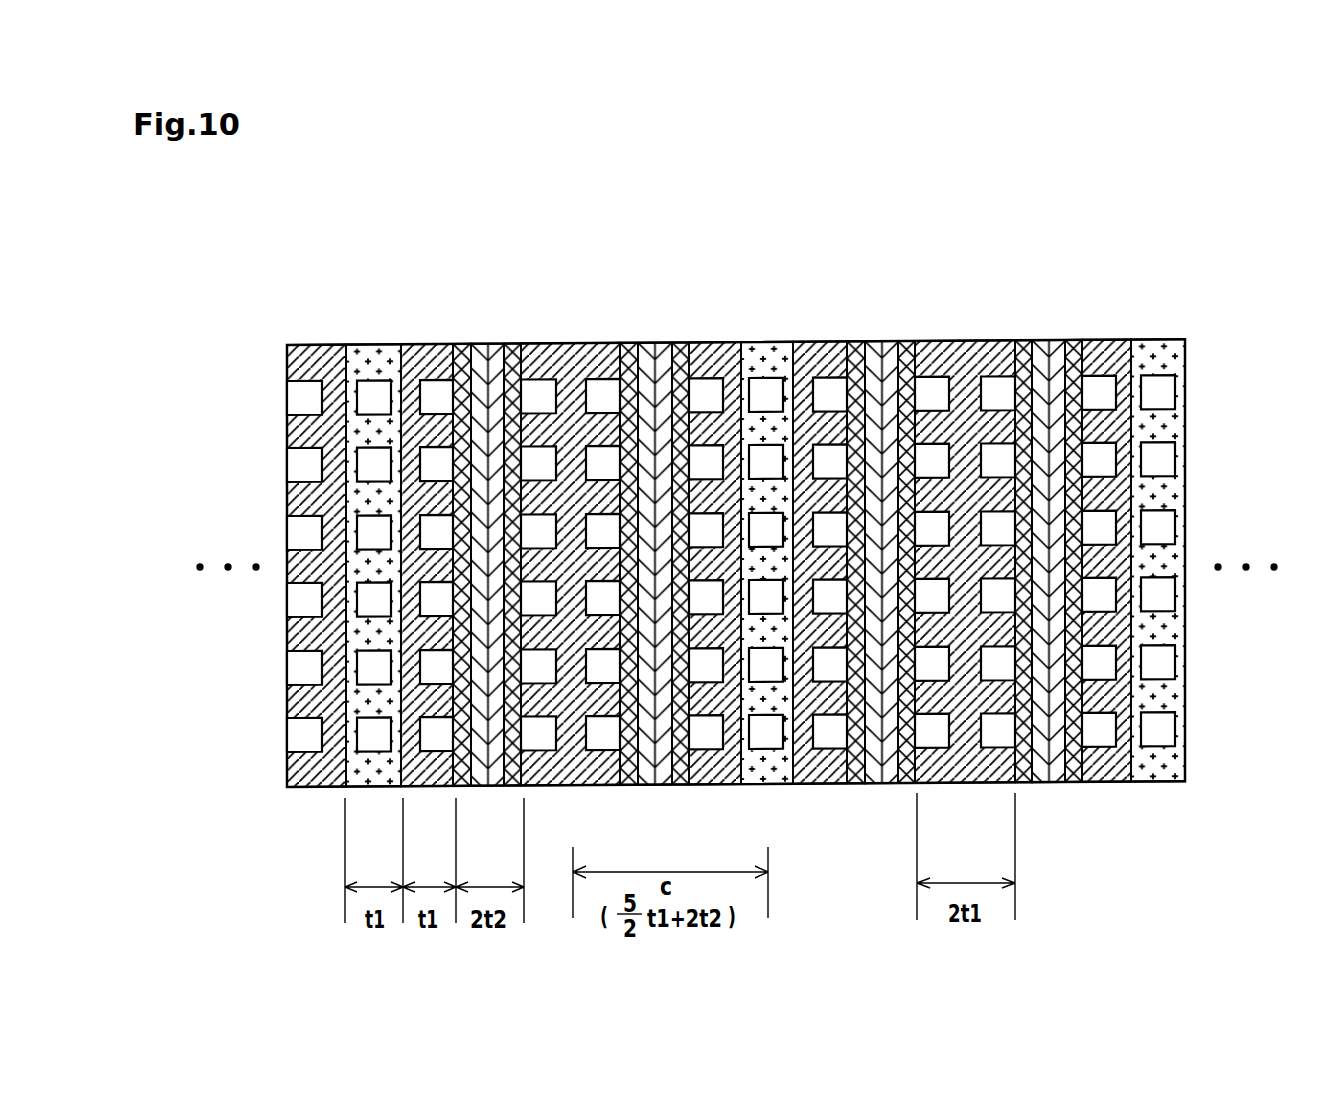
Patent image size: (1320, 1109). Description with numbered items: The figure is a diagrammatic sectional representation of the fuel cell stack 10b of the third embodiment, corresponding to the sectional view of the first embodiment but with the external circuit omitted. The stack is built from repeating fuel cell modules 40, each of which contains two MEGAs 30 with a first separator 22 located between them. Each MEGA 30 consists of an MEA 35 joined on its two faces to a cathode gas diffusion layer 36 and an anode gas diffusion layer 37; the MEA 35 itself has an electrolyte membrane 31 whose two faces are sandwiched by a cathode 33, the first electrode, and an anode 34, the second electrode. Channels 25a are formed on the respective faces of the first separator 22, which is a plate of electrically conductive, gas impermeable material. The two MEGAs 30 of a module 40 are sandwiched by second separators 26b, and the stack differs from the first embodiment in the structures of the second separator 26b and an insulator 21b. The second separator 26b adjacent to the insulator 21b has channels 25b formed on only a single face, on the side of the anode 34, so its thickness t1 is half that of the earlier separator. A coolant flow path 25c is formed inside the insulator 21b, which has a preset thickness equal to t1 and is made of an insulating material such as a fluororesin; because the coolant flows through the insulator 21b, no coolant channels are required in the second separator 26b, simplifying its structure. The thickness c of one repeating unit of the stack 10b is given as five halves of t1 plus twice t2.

The fuel cell stack 10b is at (336, 181).
The fuel cell module 40 is at (765, 473).
The MEGA 30 is at (767, 502).
The MEA 35 is at (764, 523).
The anode 34 is at (464, 345).
The electrolyte membrane 31 is at (488, 345).
The cathode 33 is at (766, 540).
The cathode gas diffusion layer 36 is at (513, 345).
The anode gas diffusion layer 37 is at (462, 345).
The second separator 26b is at (677, 569).
The insulator 21b is at (700, 554).
The first separator 22 is at (768, 578).
The channels 25a is at (768, 563).
The channels 25b is at (701, 564).
The coolant flow path 25c is at (766, 563).